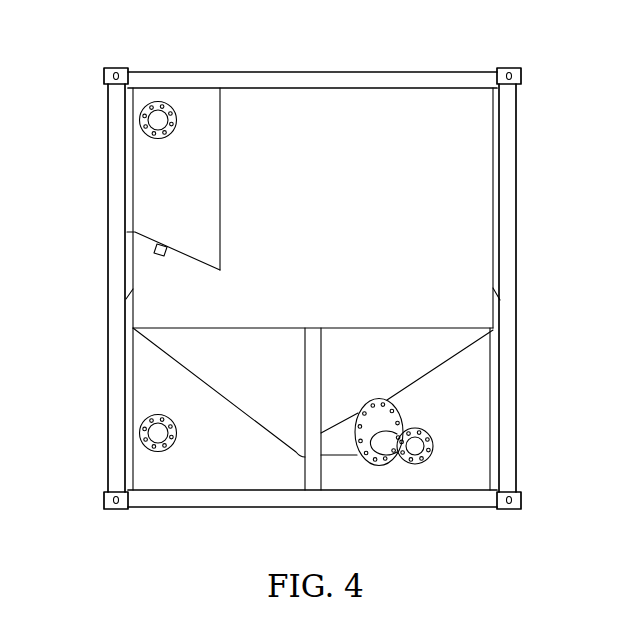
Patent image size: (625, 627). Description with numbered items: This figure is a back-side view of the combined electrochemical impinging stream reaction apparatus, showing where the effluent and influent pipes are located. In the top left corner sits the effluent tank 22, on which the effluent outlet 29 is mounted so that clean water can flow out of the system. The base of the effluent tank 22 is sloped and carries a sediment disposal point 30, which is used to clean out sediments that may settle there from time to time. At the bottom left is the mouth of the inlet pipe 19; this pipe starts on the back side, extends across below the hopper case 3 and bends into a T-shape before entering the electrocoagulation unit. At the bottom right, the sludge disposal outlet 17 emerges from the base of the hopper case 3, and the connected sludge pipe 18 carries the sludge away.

The hopper case 3 is at (418, 255).
The sludge disposal outlet 17 is at (337, 442).
The sludge pipe 18 is at (418, 444).
The inlet pipe 19 is at (158, 433).
The effluent tank 22 is at (172, 172).
The effluent outlet 29 is at (158, 118).
The sediment disposal point 30 is at (152, 252).